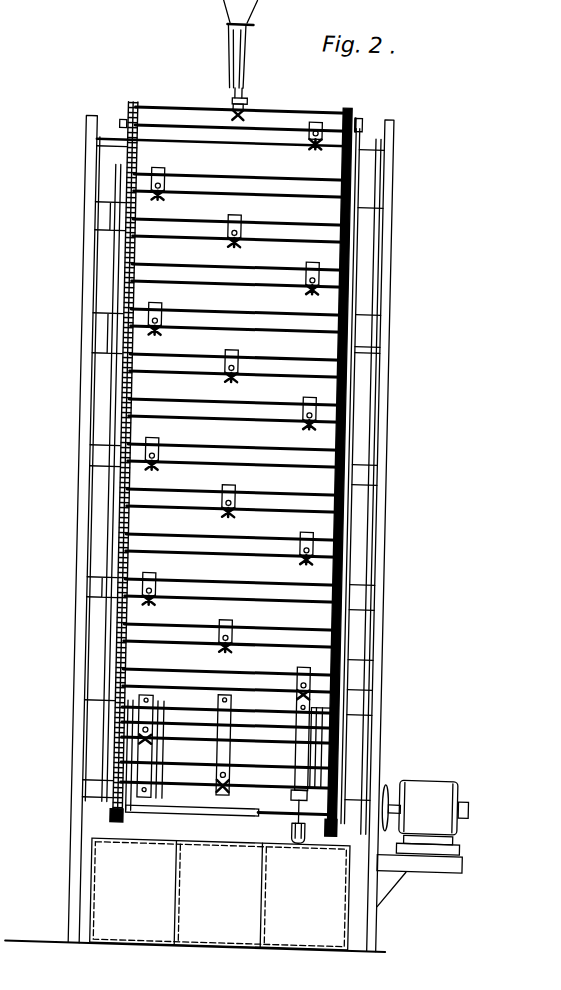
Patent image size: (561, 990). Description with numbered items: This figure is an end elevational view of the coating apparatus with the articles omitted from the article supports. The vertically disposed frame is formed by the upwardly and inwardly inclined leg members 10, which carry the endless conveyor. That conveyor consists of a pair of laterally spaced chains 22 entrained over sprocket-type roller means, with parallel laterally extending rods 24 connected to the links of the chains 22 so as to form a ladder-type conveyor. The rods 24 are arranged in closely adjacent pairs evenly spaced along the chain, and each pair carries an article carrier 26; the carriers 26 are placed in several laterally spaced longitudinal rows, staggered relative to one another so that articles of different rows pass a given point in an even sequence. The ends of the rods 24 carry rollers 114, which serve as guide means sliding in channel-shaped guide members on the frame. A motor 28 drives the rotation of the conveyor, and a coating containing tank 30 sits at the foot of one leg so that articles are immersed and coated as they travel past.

The leg member 10 is at (395, 441).
The chain 22 is at (118, 113).
The rod 24 is at (291, 231).
The article carrier 26 is at (242, 116).
The roller 114 is at (350, 119).
The motor 28 is at (428, 791).
The coating containing tank 30 is at (222, 935).